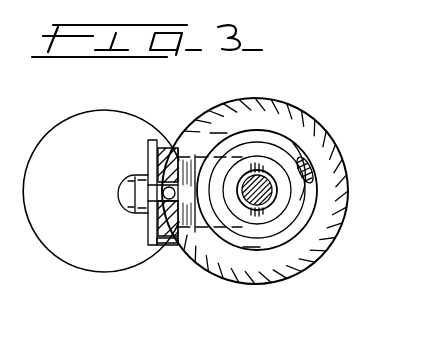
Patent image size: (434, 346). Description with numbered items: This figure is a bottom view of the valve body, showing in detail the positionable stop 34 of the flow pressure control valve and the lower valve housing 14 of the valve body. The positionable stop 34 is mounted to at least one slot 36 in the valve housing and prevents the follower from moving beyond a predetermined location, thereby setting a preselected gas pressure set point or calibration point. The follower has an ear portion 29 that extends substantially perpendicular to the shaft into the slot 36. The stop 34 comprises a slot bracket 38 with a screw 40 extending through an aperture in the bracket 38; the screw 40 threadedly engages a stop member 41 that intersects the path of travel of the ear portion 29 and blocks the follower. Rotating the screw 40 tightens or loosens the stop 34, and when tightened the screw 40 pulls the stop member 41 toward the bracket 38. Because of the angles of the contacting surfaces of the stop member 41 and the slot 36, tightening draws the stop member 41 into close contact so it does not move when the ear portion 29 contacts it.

The lower valve housing 14 is at (292, 111).
The ear portion 29 is at (195, 218).
The positionable stop 34 is at (136, 219).
The slot 36 is at (160, 167).
The slot bracket 38 is at (150, 157).
The screw 40 is at (135, 177).
The stop member 41 is at (172, 238).